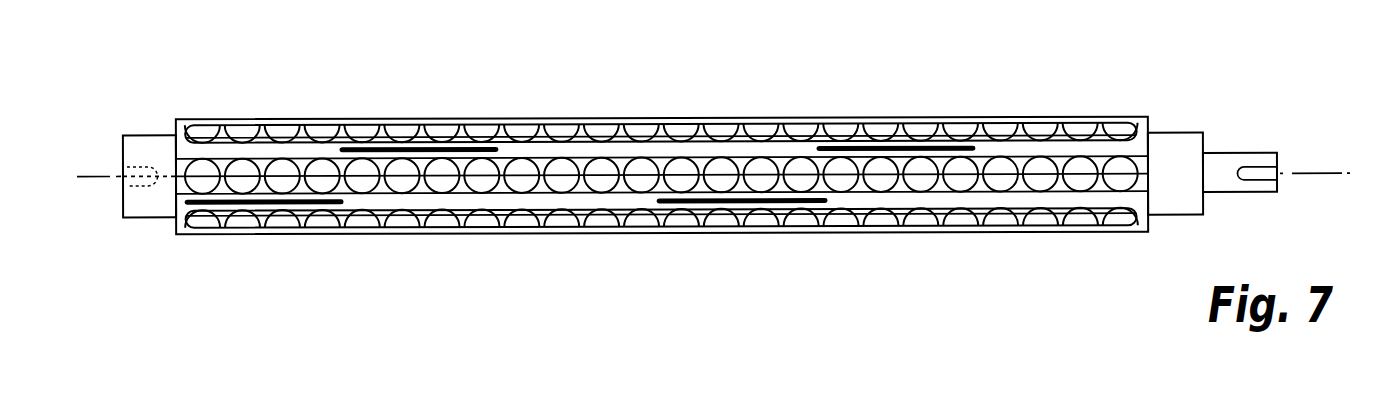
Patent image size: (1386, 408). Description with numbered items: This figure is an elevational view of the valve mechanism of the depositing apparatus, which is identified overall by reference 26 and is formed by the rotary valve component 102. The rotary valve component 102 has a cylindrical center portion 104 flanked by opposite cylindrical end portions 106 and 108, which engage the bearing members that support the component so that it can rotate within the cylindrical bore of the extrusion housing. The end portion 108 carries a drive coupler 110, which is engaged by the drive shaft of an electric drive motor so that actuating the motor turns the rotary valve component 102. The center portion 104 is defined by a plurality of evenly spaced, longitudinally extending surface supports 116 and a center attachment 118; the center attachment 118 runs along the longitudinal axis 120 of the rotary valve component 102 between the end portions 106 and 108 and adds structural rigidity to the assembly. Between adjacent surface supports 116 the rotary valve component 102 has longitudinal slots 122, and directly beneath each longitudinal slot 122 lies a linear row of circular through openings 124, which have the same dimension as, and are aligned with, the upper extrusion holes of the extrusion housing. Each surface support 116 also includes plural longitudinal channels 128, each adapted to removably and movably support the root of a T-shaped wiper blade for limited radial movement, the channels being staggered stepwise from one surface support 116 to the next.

The roller assembly 26 is at (731, 163).
The rotary valve component 102 is at (1125, 117).
The cylindrical center portion 104 is at (353, 118).
The cylindrical end portion 106 is at (146, 148).
The cylindrical end portion 108 is at (1168, 206).
The drive coupler 110 is at (1220, 153).
The surface support 116 is at (540, 148).
The center attachment 118 is at (955, 178).
The longitudinal axis 120 is at (1308, 172).
The longitudinal slot 122 is at (662, 160).
The circular through opening 124 is at (580, 253).
The longitudinal channel 128 is at (362, 151).